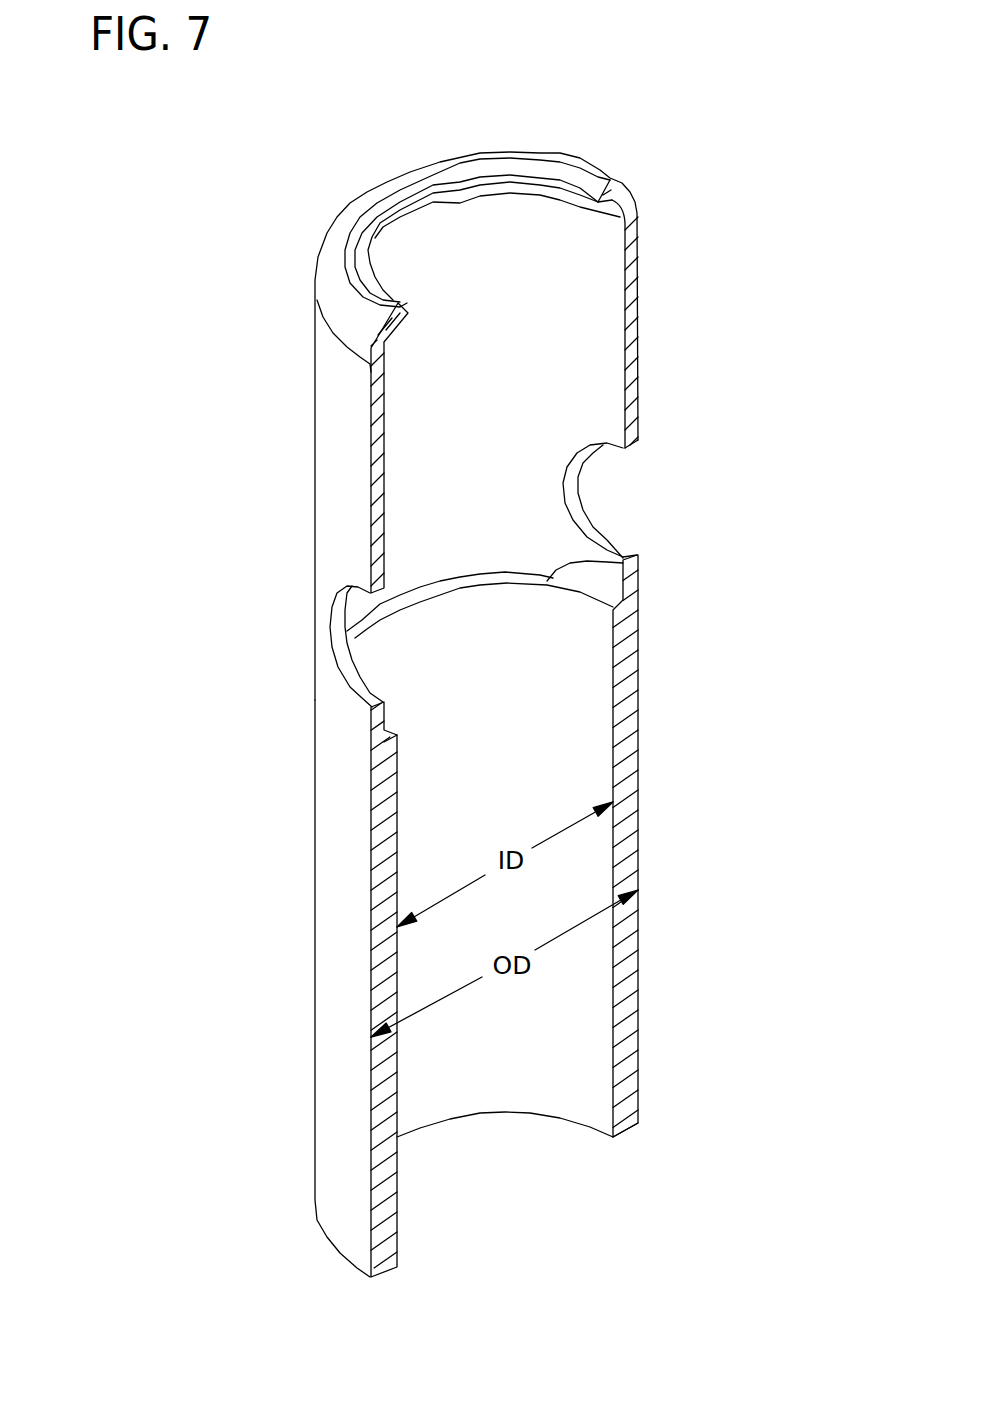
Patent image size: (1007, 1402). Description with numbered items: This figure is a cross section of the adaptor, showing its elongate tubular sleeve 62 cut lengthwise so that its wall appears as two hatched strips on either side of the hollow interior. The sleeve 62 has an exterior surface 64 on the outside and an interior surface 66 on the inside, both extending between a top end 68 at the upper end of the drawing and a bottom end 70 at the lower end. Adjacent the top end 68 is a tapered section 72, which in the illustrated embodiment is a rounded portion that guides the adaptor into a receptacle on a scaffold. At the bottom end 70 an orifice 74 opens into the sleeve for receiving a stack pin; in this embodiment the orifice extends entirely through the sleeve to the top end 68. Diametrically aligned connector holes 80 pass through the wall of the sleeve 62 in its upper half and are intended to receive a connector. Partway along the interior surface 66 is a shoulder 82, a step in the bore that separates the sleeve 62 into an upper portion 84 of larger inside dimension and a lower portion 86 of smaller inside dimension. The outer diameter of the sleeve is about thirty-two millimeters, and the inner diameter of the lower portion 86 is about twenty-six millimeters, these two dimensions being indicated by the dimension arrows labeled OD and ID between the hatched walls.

The elongate tubular sleeve 62 is at (342, 988).
The exterior surface 64 is at (340, 458).
The interior surface 66 is at (567, 268).
The top end 68 is at (524, 157).
The bottom end 70 is at (582, 1125).
The tapered section 72 is at (354, 212).
The orifice 74 is at (447, 1173).
The connector holes 80 is at (593, 530).
The shoulder 82 is at (553, 583).
The upper portion 84 is at (572, 323).
The lower portion 86 is at (538, 677).